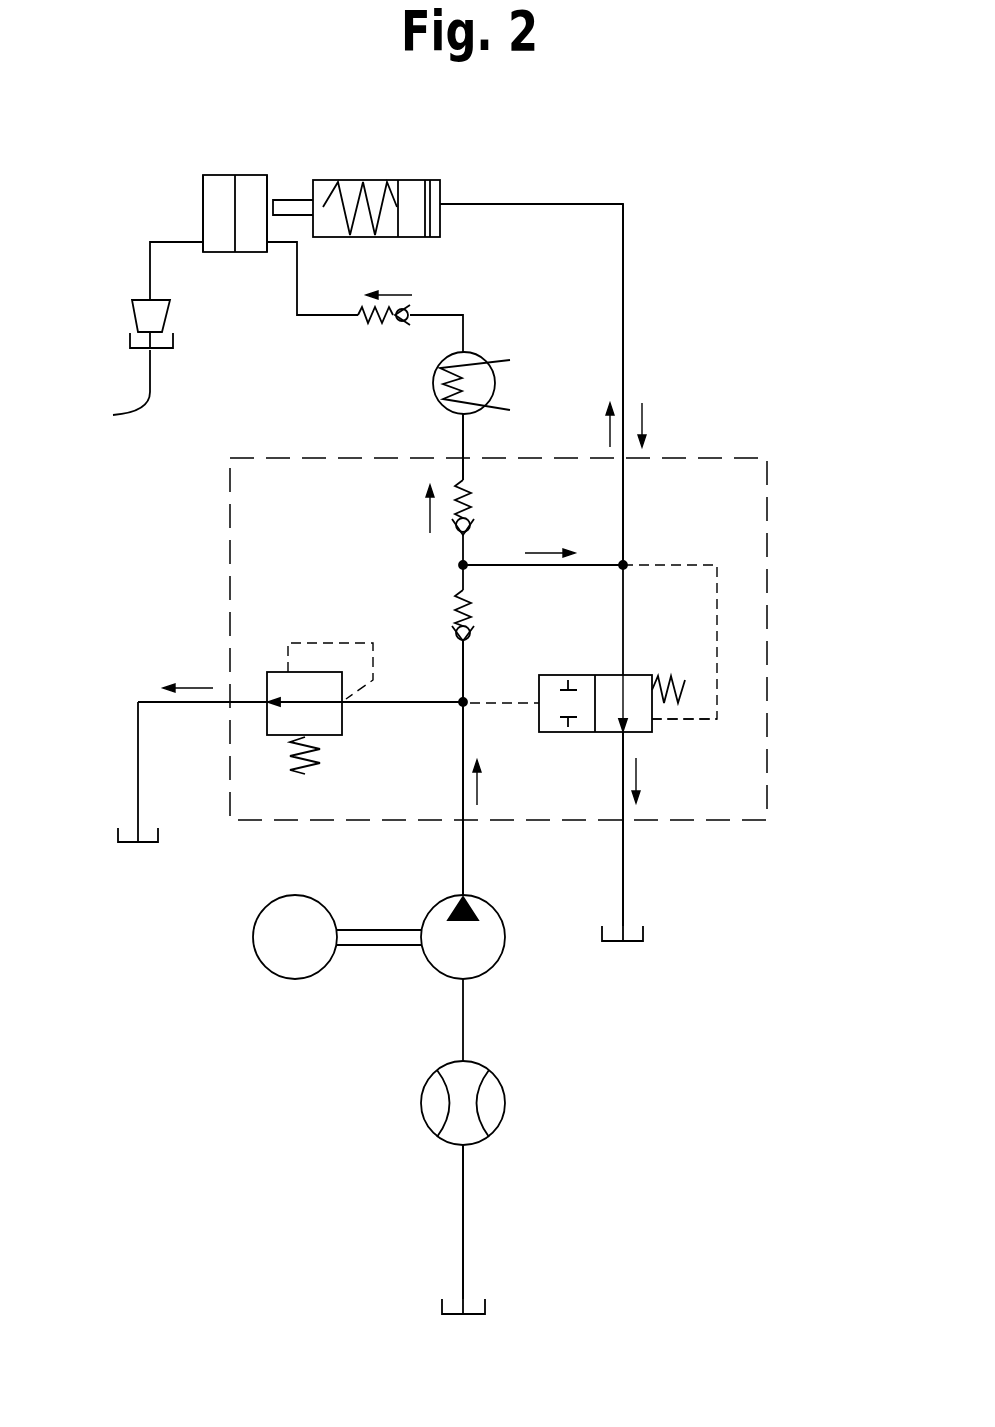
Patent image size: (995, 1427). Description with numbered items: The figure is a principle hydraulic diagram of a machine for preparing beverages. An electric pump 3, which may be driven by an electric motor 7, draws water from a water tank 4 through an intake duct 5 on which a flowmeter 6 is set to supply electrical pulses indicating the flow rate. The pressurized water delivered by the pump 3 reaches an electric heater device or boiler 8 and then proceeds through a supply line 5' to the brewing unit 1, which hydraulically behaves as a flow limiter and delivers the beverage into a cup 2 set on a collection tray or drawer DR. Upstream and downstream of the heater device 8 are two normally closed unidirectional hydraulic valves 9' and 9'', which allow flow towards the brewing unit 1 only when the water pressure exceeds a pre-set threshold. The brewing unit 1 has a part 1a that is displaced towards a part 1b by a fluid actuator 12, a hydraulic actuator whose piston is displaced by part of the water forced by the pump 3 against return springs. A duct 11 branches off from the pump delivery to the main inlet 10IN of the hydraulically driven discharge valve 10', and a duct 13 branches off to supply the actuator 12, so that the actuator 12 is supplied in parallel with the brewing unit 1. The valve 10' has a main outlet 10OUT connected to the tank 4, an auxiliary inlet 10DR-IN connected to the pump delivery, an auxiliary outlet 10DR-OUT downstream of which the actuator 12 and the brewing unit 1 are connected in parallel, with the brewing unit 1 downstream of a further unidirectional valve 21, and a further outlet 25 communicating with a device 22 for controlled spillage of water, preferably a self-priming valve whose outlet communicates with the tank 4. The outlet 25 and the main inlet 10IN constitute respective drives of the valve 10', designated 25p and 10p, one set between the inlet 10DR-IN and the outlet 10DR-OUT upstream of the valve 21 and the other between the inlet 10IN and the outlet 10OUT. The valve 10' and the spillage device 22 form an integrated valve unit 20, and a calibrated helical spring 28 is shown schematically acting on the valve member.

The brewing unit 1 is at (221, 231).
The part of the brewing unit 1a is at (252, 182).
The part of the brewing unit 1b is at (217, 182).
The cup 2 is at (138, 307).
The electric pump 3 is at (475, 963).
The water tank 4 is at (452, 1318).
The intake duct 5 is at (400, 1222).
The supply line 5' is at (403, 444).
The flowmeter 6 is at (493, 1110).
The electric motor 7 is at (285, 967).
The heater device 8 is at (440, 397).
The unidirectional hydraulic valve 9' is at (514, 471).
The unidirectional hydraulic valve 9'' is at (432, 289).
The hydraulically driven discharge valve 10' is at (684, 775).
The drive of the valve 10p is at (710, 720).
The main inlet 10IN is at (623, 628).
The main outlet 10OUT is at (623, 838).
The auxiliary inlet 10DR-IN is at (460, 735).
The auxiliary outlet 10DR-OUT is at (460, 672).
The duct 11 is at (513, 565).
The fluid actuator 12 is at (375, 165).
The duct 13 is at (625, 370).
The integrated valve unit 20 is at (205, 558).
The unidirectional valve 21 is at (443, 597).
The spillage device 22 is at (258, 660).
The further outlet 25 is at (412, 703).
The drive of the valve 25p is at (503, 707).
The calibrated helical spring 28 is at (677, 673).